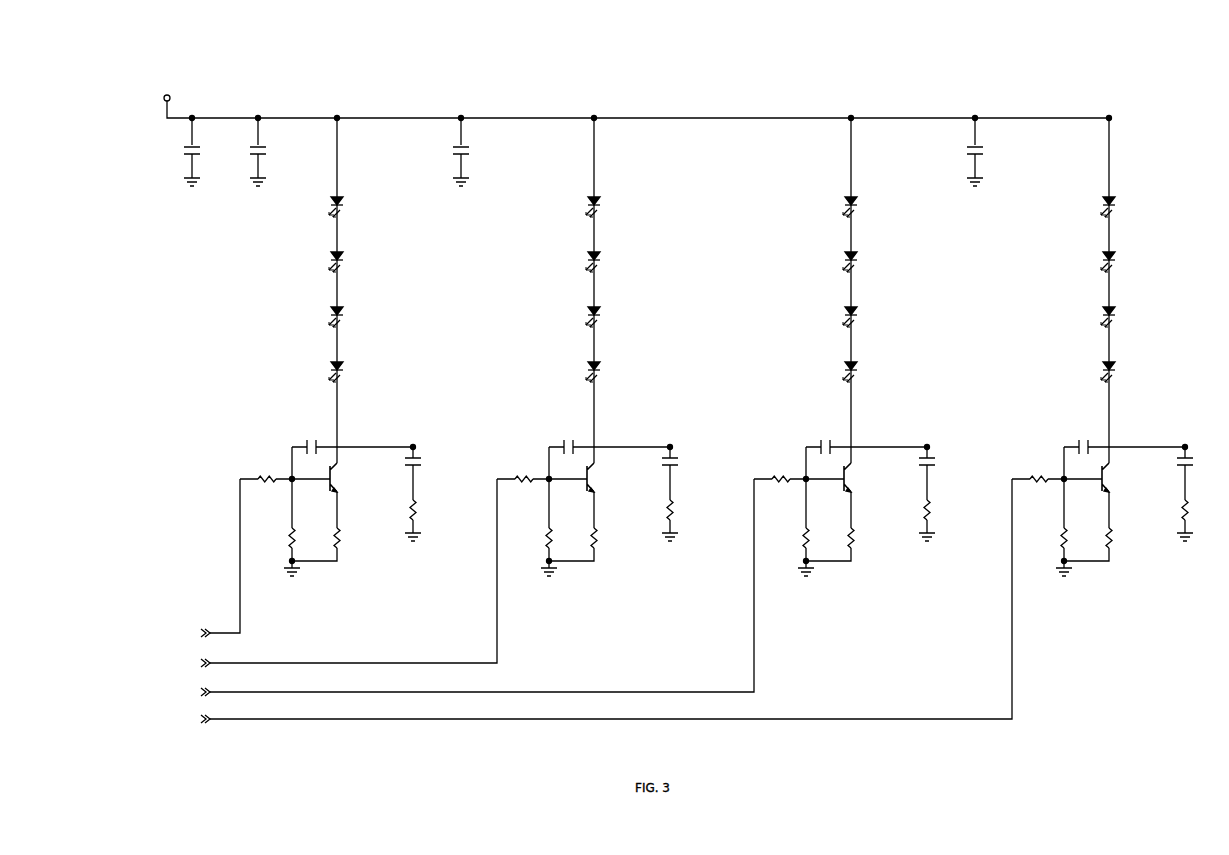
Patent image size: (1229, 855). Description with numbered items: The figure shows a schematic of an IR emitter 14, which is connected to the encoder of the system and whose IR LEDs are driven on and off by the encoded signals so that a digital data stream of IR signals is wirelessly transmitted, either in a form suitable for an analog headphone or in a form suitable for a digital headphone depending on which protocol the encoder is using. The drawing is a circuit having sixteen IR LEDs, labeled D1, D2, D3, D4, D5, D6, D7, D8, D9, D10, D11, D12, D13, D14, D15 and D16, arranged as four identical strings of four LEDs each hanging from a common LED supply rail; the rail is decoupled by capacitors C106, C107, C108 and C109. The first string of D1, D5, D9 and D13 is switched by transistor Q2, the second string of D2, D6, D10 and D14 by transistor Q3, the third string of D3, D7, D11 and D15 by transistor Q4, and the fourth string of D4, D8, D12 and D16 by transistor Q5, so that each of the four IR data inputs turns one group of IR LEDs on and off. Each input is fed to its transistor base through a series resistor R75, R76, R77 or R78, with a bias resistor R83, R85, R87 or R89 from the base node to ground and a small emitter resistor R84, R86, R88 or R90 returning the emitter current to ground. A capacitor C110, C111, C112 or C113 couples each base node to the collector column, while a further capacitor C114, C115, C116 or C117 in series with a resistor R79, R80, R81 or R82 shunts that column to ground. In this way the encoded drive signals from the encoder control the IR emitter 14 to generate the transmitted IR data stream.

The IR emitter 14 is at (683, 387).
The capacitor 10nF C106 is at (207, 154).
The capacitor 10pF C107 is at (273, 154).
The capacitor 10uF C108 is at (476, 154).
The capacitor 10uF C109 is at (990, 154).
The IR LED D1 is at (359, 206).
The IR LED D2 is at (616, 206).
The IR LED D3 is at (873, 206).
The IR LED D4 is at (1131, 206).
The IR LED D5 is at (359, 261).
The IR LED D6 is at (616, 261).
The IR LED D7 is at (873, 261).
The IR LED D8 is at (1131, 261).
The IR LED D9 is at (359, 316).
The IR LED D10 is at (616, 316).
The IR LED D11 is at (873, 316).
The IR LED D12 is at (1131, 316).
The IR LED D13 is at (359, 371).
The IR LED D14 is at (616, 371).
The IR LED D15 is at (873, 371).
The IR LED D16 is at (1131, 371).
The capacitor 47pF C110 is at (311, 430).
The capacitor 47pF C111 is at (568, 430).
The capacitor 47pF C112 is at (825, 430).
The capacitor 47pF C113 is at (1083, 430).
The capacitor 220pF C114 is at (433, 459).
The capacitor 220pF C115 is at (690, 459).
The capacitor 220pF C116 is at (947, 459).
The capacitor 220pF C117 is at (1203, 459).
The transistor FMMT491A Q2 is at (357, 475).
The transistor FMMT491A Q3 is at (614, 475).
The transistor FMMT491A Q4 is at (871, 475).
The transistor FMMT491A Q5 is at (1129, 475).
The resistor 68 R75 is at (265, 486).
The resistor 68 R76 is at (522, 486).
The resistor 68 R77 is at (779, 486).
The resistor 68 R78 is at (1037, 486).
The resistor 10 R79 is at (429, 510).
The resistor 10 R80 is at (686, 510).
The resistor 10 R81 is at (943, 510).
The resistor 10 R82 is at (1201, 510).
The resistor 10K R83 is at (279, 534).
The resistor 6.2 R84 is at (351, 534).
The resistor 10K R85 is at (536, 534).
The resistor 6.2 R86 is at (608, 534).
The resistor 10K R87 is at (793, 534).
The resistor 6.2 R88 is at (865, 534).
The resistor 10K R89 is at (1051, 534).
The resistor 6.2 R90 is at (1123, 534).